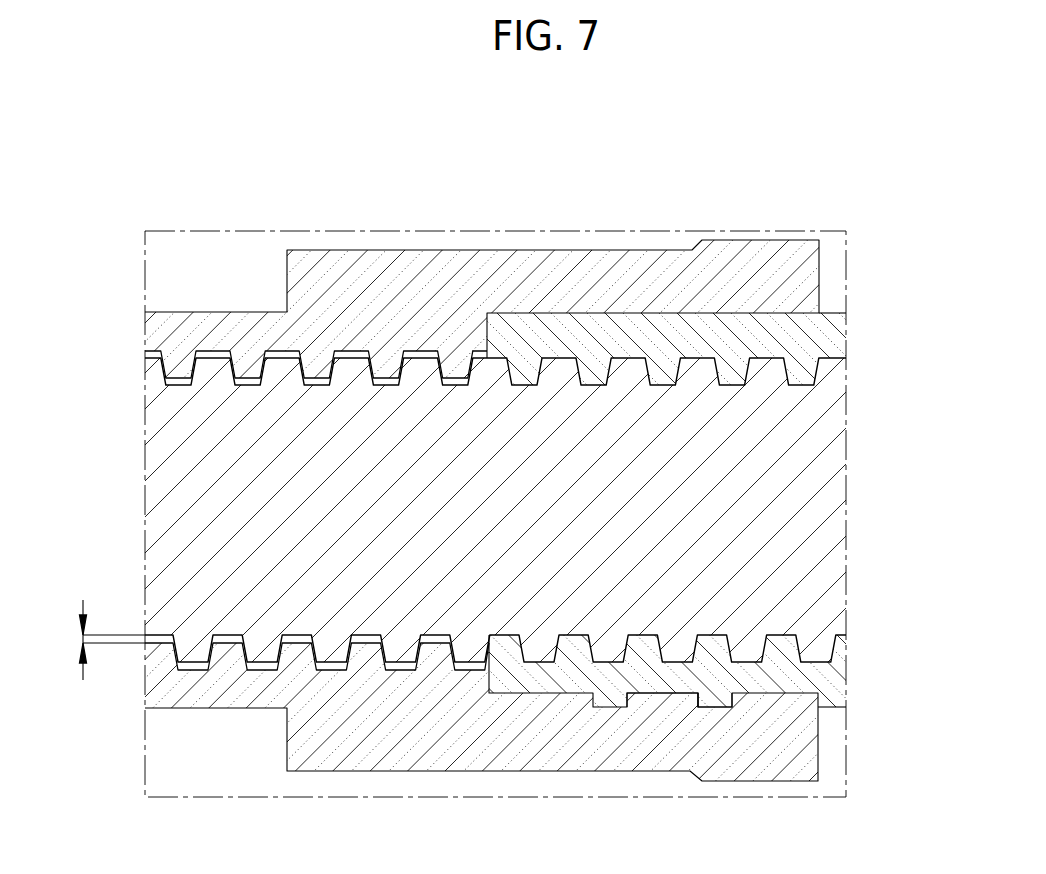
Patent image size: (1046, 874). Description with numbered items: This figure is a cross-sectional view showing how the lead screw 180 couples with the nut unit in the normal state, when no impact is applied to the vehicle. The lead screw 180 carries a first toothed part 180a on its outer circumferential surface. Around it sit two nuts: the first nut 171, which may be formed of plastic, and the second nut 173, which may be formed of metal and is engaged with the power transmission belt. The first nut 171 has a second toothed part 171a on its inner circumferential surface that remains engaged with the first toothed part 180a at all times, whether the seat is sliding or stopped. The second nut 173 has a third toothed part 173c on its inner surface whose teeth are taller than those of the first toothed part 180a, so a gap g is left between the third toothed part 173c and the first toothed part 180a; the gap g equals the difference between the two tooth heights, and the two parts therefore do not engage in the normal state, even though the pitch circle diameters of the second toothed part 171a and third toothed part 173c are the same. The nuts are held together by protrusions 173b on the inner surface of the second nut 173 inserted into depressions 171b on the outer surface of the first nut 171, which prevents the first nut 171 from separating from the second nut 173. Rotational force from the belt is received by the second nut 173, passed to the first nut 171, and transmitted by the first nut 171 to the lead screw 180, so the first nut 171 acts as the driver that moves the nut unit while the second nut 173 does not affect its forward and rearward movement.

The lead screw 180 is at (821, 494).
The first toothed part 180a is at (210, 368).
The second nut 173 is at (495, 270).
The third toothed part 173c is at (196, 363).
The protrusions 173b is at (658, 702).
The first nut 171 is at (832, 682).
The second toothed part 171a is at (813, 660).
The depressions 171b is at (685, 693).
The gap g is at (101, 640).